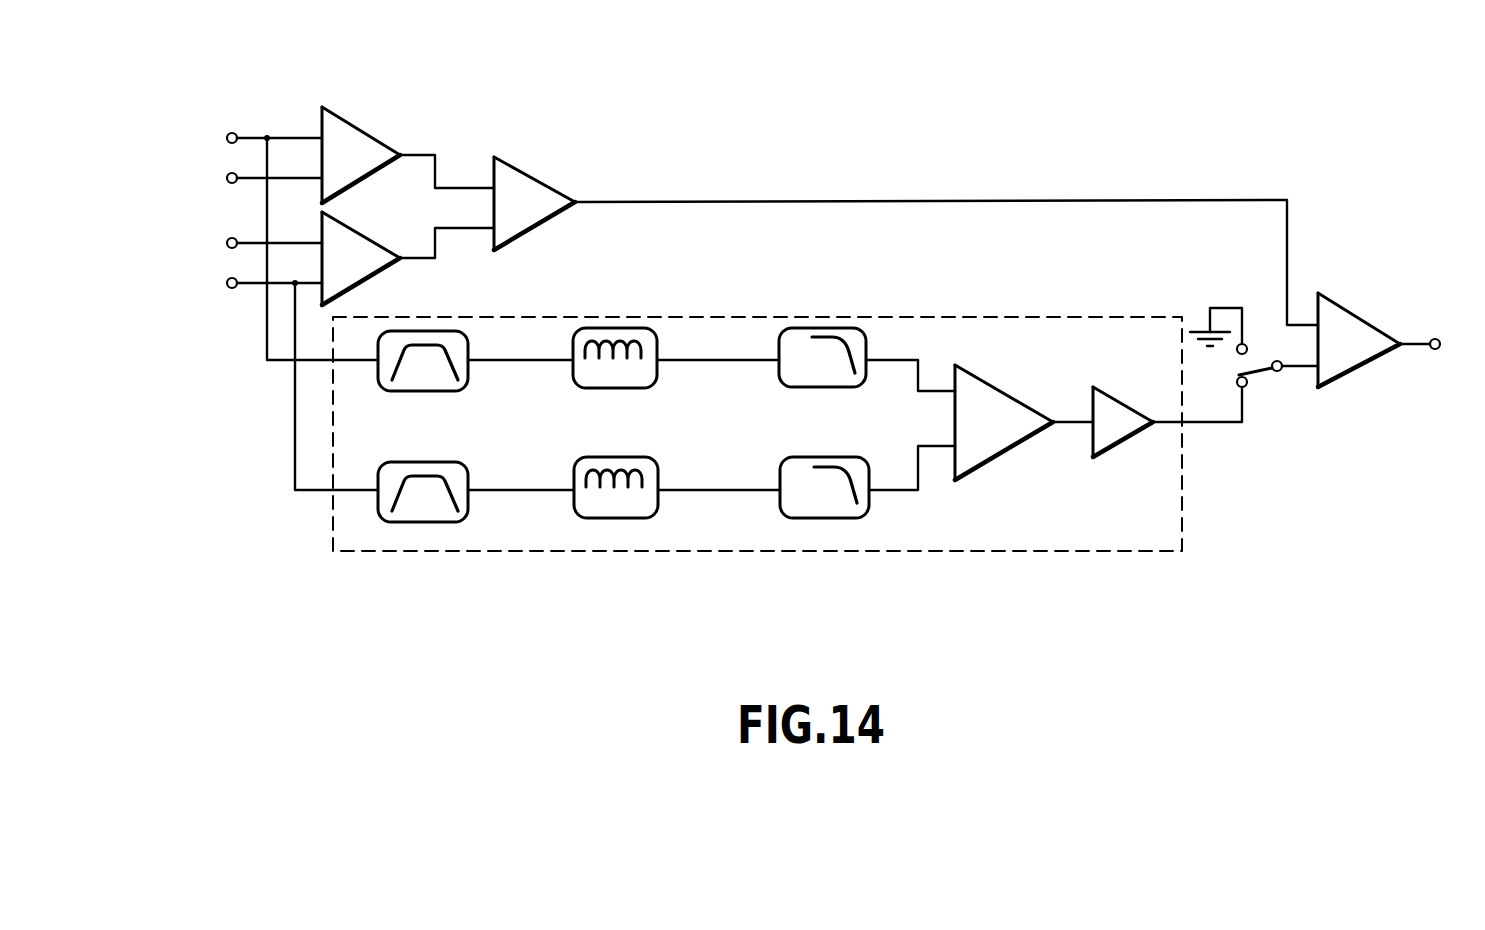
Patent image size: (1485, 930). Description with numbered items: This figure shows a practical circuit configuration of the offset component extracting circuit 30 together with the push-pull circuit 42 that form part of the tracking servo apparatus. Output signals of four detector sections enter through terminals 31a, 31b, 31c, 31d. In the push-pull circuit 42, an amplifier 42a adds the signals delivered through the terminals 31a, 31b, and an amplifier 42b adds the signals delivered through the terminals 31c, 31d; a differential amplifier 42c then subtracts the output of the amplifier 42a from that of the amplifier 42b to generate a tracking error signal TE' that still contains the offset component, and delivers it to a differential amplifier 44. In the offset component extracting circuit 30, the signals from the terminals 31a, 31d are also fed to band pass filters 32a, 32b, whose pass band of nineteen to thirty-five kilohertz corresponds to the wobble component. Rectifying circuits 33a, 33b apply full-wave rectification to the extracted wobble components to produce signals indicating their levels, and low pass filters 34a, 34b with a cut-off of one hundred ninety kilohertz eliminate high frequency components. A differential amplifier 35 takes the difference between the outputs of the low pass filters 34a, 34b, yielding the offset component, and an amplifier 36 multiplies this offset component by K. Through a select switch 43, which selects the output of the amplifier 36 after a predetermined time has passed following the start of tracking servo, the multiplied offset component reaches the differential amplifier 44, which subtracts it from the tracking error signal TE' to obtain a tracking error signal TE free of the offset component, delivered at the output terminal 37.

The terminal 31a is at (227, 138).
The terminal 31b is at (227, 178).
The terminal 31c is at (227, 243).
The terminal 31d is at (227, 283).
The push-pull circuit 42 is at (458, 154).
The amplifier 42a is at (378, 137).
The amplifier 42b is at (377, 243).
The differential amplifier 42c is at (550, 183).
The offset component extracting circuit 30 is at (1005, 312).
The band pass filter 32a is at (433, 331).
The band pass filter 32b is at (430, 522).
The rectifying circuit 33a is at (612, 328).
The rectifying circuit 33b is at (628, 518).
The low pass filter 34a is at (825, 328).
The low pass filter 34b is at (820, 518).
The differential amplifier 35 is at (1013, 448).
The amplifier 36 is at (1127, 442).
The select switch 43 is at (1270, 362).
The differential amplifier 44 is at (1373, 323).
The tracking error signal output terminal TE 37 is at (1435, 338).